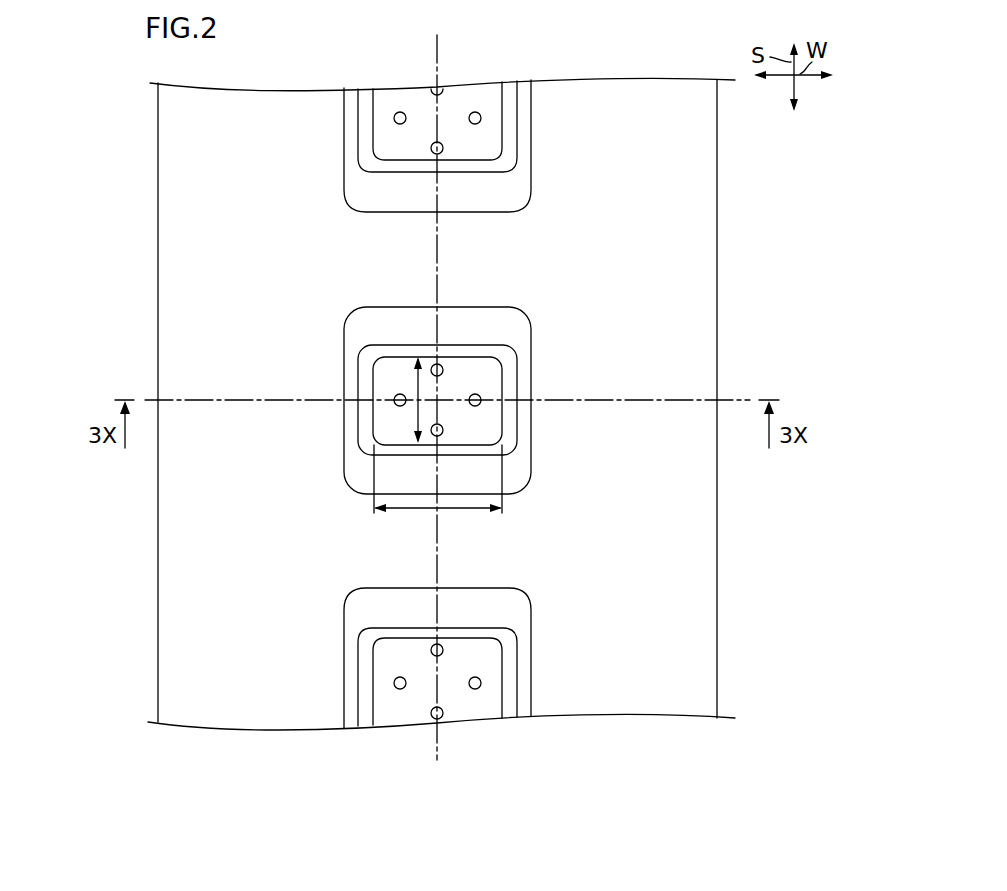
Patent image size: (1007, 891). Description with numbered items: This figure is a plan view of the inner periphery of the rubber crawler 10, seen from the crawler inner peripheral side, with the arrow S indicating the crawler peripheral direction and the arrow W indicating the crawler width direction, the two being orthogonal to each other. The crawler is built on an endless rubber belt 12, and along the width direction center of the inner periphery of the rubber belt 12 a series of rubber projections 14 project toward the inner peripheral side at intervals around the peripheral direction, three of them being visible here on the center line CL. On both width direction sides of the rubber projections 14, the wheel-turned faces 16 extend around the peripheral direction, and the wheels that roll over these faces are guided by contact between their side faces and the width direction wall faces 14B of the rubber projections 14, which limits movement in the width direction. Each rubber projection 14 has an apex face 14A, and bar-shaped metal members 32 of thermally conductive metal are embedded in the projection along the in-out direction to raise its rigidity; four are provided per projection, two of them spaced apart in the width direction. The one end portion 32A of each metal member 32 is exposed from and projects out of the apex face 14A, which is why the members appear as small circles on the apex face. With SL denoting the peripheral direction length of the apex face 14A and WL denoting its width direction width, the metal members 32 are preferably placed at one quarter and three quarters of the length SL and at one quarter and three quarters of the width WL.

The rubber crawler 10 is at (124, 80).
The rubber belt 12 is at (722, 165).
The rubber projection 14 is at (537, 154).
The apex face 14A is at (385, 130).
The width direction wall face 14B is at (352, 150).
The wheel-turned face 16 is at (250, 712).
The metal member 32 is at (505, 379).
The one end portion 32A is at (475, 111).
The center line CL is at (437, 50).
The apex face length SL is at (418, 352).
The apex face width WL is at (426, 510).